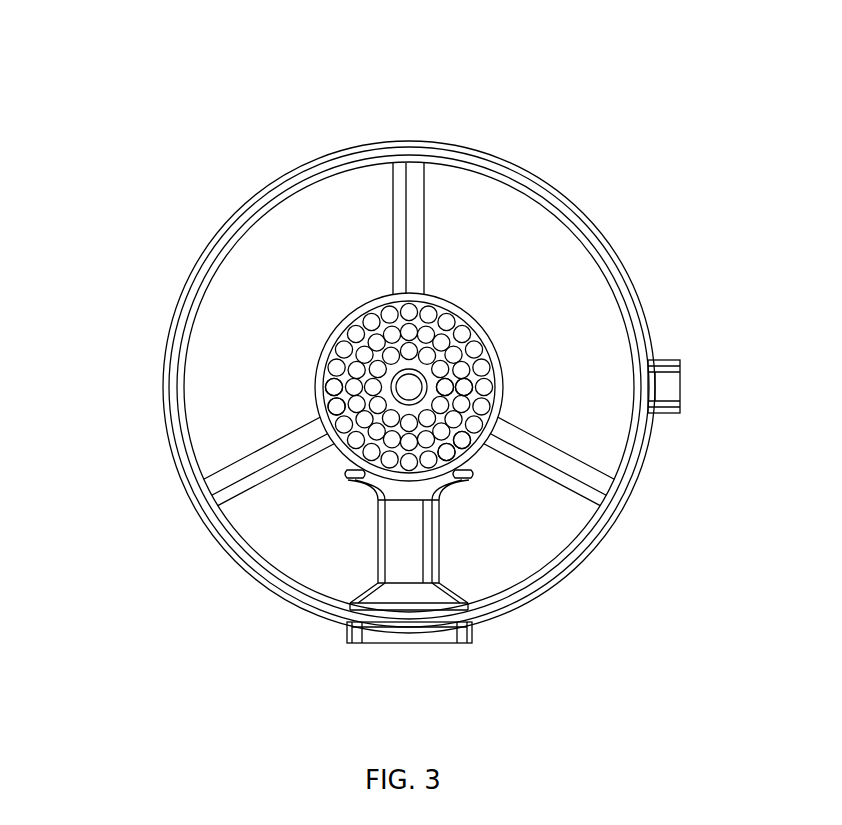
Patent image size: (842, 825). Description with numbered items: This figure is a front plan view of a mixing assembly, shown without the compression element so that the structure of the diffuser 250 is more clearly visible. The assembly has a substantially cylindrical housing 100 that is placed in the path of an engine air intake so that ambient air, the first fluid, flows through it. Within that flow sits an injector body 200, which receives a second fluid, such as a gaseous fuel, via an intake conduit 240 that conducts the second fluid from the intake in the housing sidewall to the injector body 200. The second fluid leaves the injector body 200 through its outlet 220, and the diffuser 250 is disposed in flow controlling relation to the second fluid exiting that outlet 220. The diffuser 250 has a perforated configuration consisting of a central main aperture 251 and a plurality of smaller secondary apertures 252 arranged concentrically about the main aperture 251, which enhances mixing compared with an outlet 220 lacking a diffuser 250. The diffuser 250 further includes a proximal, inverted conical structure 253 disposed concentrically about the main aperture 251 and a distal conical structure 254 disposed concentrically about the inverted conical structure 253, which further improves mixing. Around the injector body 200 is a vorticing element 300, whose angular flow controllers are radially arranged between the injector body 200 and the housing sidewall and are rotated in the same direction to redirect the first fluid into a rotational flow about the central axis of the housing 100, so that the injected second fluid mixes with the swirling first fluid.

The housing 100 is at (521, 170).
The vorticing element 300 is at (419, 163).
The intake conduit 240 is at (313, 306).
The diffuser 250 is at (468, 326).
The main aperture 251 is at (406, 386).
The secondary apertures 252 is at (332, 403).
The proximal inverted conical structure 253 is at (446, 384).
The distal conical structure 254 is at (452, 453).
The injector body 200 is at (373, 450).
The outlet 220 is at (362, 470).